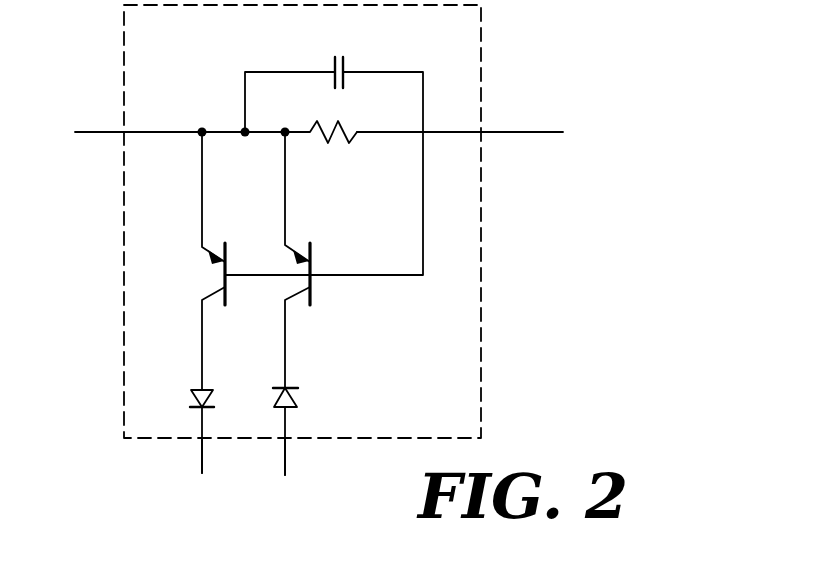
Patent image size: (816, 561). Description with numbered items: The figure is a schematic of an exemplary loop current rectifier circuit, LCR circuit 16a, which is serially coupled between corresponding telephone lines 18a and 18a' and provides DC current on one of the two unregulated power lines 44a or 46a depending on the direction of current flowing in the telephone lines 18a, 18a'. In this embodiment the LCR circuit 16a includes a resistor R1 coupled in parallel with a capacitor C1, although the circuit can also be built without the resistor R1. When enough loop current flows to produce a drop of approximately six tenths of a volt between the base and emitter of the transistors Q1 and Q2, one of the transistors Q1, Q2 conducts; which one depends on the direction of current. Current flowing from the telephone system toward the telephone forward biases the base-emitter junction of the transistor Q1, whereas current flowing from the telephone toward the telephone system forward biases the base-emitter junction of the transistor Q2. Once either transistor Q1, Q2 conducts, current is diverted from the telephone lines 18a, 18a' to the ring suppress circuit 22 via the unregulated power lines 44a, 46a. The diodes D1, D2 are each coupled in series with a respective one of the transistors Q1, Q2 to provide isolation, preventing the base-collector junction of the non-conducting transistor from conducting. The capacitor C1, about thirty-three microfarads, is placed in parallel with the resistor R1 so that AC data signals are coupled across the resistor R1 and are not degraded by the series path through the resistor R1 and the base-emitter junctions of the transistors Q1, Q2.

The LCR circuit 16a is at (483, 425).
The telephone line 18a is at (182, 112).
The telephone line 18a' is at (467, 116).
The capacitor C1 is at (339, 60).
The resistor R1 is at (313, 126).
The transistor Q1 is at (222, 281).
The transistor Q2 is at (300, 286).
The diode D1 is at (189, 431).
The diode D2 is at (299, 431).
The unregulated power line 44a is at (201, 450).
The unregulated power line 46a is at (287, 455).
The ring suppress circuit 22 is at (254, 517).